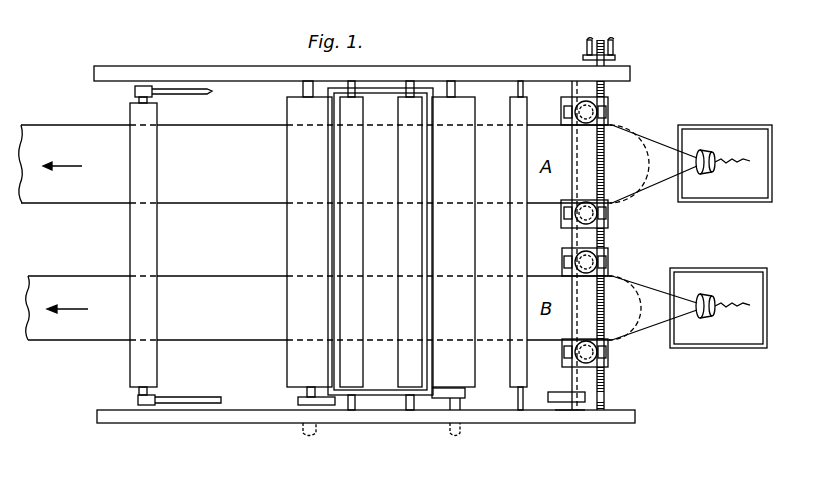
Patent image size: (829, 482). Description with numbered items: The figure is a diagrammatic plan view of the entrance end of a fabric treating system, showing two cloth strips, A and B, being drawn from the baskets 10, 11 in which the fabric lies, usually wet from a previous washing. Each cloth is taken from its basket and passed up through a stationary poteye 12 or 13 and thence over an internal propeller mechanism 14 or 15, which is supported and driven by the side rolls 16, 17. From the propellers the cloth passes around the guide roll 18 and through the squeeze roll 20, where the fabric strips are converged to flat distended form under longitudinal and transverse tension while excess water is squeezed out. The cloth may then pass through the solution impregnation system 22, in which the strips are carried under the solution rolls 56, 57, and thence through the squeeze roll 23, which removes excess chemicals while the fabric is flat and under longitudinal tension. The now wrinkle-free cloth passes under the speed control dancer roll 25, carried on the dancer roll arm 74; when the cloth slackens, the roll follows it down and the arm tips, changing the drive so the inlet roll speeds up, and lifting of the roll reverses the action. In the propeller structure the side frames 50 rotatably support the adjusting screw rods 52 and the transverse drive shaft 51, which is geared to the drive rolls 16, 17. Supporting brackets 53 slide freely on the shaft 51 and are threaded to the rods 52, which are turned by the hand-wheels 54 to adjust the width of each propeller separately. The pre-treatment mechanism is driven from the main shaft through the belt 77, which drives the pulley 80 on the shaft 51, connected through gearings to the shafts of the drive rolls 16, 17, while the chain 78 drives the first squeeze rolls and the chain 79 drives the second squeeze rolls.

The basket 10 is at (756, 133).
The basket 11 is at (750, 280).
The stationary poteye 12 is at (707, 152).
The stationary poteye 13 is at (703, 318).
The internal propeller mechanism 14 is at (644, 178).
The internal propeller mechanism 15 is at (643, 320).
The side roll 16 is at (598, 103).
The side roll 17 is at (610, 256).
The guide roll 18 is at (518, 362).
The squeeze roll 20 is at (468, 233).
The solution impregnation system 22 is at (380, 404).
The squeeze roll 23 is at (287, 241).
The speed control dancer roll 25 is at (157, 242).
The side frame 50 is at (474, 66).
The transverse drive shaft 51 is at (571, 241).
The adjusting screw rod 52 is at (606, 86).
The supporting bracket 53 is at (605, 110).
The hand-wheel 54 is at (571, 55).
The solution roll 56 is at (405, 242).
The solution roll 57 is at (357, 163).
The dancer roll arm 74 is at (200, 94).
The belt 77 is at (559, 403).
The chain 78 is at (441, 400).
The chain 79 is at (323, 406).
The pulley 80 is at (568, 390).